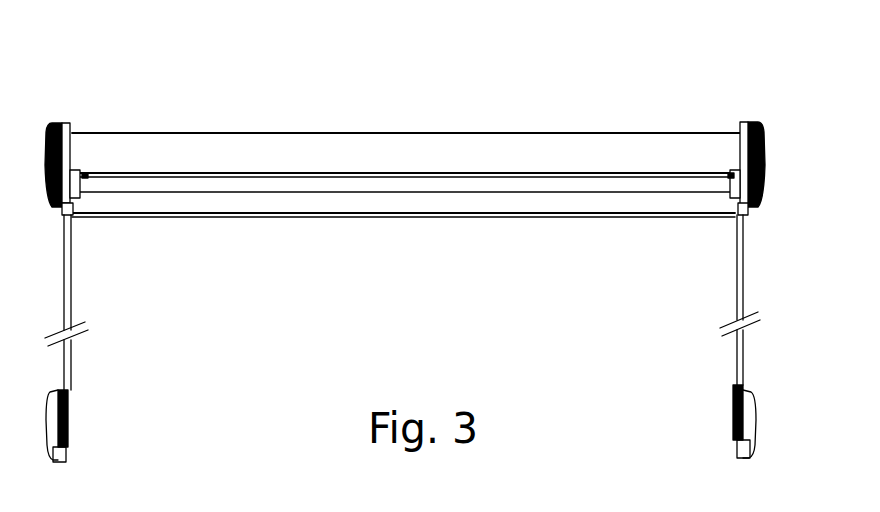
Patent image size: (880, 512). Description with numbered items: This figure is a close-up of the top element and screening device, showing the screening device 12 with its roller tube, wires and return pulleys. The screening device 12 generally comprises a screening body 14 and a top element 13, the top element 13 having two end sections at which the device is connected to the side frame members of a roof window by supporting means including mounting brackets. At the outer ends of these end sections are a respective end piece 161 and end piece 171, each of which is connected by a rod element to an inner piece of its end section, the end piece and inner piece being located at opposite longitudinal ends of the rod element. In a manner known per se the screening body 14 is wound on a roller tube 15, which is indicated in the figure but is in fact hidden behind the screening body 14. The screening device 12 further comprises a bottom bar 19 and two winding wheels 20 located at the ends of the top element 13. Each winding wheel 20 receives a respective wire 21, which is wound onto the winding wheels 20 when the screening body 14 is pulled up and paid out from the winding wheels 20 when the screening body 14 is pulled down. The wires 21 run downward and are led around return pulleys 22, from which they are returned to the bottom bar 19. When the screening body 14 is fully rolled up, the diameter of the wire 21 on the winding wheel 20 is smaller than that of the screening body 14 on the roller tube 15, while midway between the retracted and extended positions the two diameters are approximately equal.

The screening device 12 is at (645, 88).
The top element 13 is at (532, 228).
The screening body 14 is at (293, 180).
The roller tube 15 is at (375, 137).
The bottom bar 19 is at (412, 215).
The winding wheel 20 is at (87, 177).
The wire 21 is at (70, 263).
The return pulley 22 is at (68, 420).
The end piece 161 is at (747, 122).
The end piece 171 is at (55, 125).